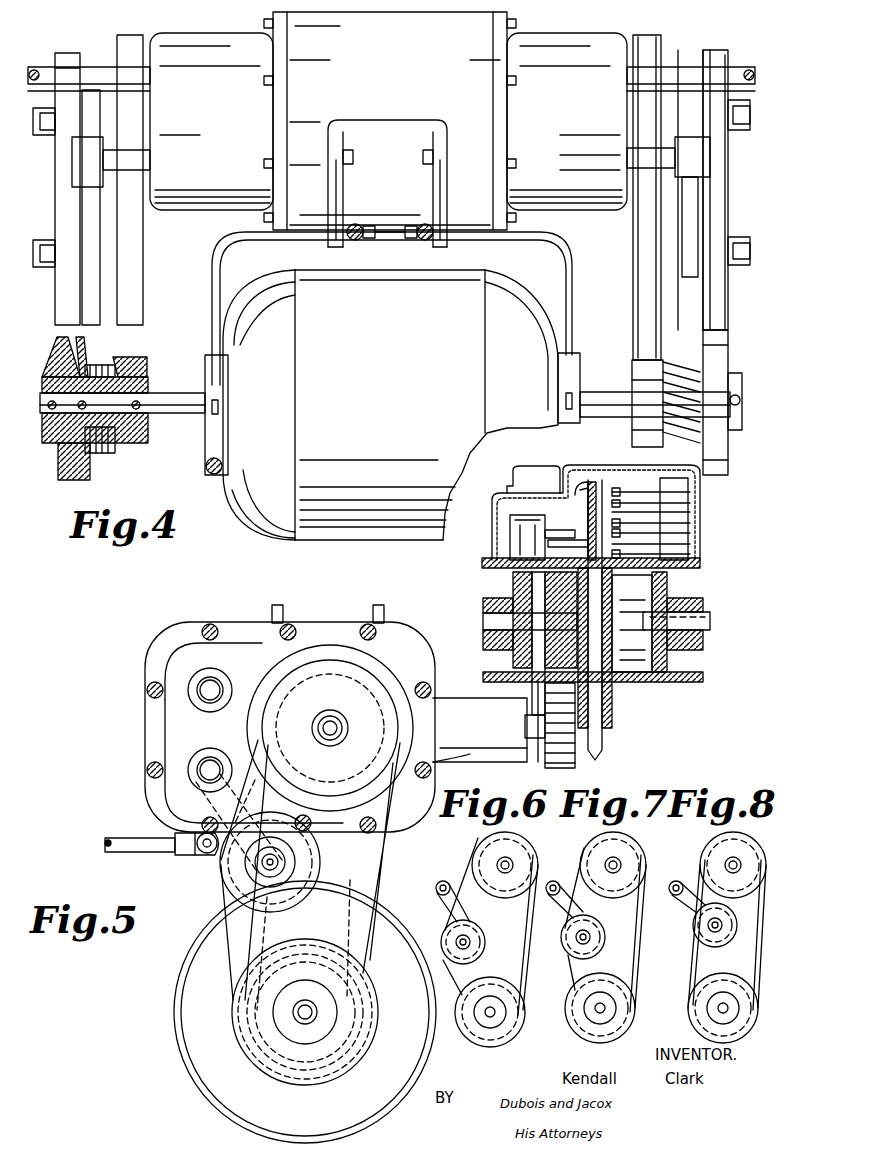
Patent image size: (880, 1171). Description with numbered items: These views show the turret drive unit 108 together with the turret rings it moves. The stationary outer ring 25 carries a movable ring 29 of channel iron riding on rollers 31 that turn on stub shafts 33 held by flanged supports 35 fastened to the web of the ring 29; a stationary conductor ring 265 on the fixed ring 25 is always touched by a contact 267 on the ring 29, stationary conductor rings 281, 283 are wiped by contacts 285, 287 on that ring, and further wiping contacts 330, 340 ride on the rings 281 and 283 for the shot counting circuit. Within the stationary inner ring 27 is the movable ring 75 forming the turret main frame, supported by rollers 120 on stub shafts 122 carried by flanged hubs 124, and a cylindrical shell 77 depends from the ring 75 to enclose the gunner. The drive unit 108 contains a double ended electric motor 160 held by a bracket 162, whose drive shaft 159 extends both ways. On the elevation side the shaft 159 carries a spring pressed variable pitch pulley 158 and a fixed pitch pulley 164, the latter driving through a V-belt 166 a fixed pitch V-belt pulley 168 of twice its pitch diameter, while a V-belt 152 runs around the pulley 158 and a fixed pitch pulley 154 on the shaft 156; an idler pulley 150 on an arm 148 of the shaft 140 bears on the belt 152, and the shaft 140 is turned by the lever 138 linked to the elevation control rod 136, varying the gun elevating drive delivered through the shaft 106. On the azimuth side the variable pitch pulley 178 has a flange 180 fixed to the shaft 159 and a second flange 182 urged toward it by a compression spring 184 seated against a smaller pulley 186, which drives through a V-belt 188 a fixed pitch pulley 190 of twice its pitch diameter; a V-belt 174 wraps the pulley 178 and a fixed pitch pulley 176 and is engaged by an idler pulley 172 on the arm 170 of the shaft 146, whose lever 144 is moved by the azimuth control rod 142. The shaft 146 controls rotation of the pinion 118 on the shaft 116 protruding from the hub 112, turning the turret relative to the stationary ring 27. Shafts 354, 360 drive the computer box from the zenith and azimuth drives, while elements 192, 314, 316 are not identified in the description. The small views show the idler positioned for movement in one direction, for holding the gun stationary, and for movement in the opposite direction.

In FIG. 5, the stationary outer ring 25 is at (610, 680).
In FIG. 5, the stationary inner ring 27 is at (520, 675).
In FIG. 5, the movable ring 29 is at (700, 575).
In FIG. 5, the rollers 31 is at (640, 660).
In FIG. 5, the stub shafts 33 is at (712, 618).
In FIG. 5, the flanged supports 35 is at (700, 640).
In FIG. 5, the movable ring 75 is at (482, 564).
In FIG. 5, the cylindrical shell 77 is at (536, 762).
In FIG. 4, the shaft 106 is at (45, 77).
In FIG. 5, the shaft 106 is at (208, 690).
In FIG. 4, the turret drive unit 108 is at (400, 60).
In FIG. 5, the turret drive unit 108 is at (180, 640).
In FIG. 5, the hub 112 is at (480, 730).
In FIG. 5, the shaft 116 is at (532, 720).
In FIG. 5, the pinion 118 is at (575, 762).
In FIG. 5, the rollers 120 is at (560, 590).
In FIG. 5, the stub shafts 122 is at (490, 618).
In FIG. 5, the flanged hubs 124 is at (495, 640).
In FIG. 4, the elevation control rod 136 is at (425, 224).
In FIG. 5, the elevation control rod 136 is at (120, 848).
In FIG. 4, the lever 138 is at (440, 196).
In FIG. 5, the lever 138 is at (185, 822).
In FIG. 4, the shaft 140 is at (422, 157).
In FIG. 5, the shaft 140 is at (205, 765).
In FIG. 6, the shaft 140 is at (440, 884).
In FIG. 7, the shaft 140 is at (560, 875).
In FIG. 8, the shaft 140 is at (680, 880).
In FIG. 4, the azimuth control rod 142 is at (355, 224).
In FIG. 4, the lever 144 is at (338, 197).
In FIG. 4, the shaft 146 is at (354, 160).
In FIG. 4, the arm 148 is at (682, 237).
In FIG. 5, the arm 148 is at (205, 800).
In FIG. 6, the arm 148 is at (467, 910).
In FIG. 7, the arm 148 is at (575, 915).
In FIG. 8, the arm 148 is at (695, 910).
In FIG. 4, the idler pulley 150 is at (728, 225).
In FIG. 5, the idler pulley 150 is at (225, 880).
In FIG. 6, the idler pulley 150 is at (478, 937).
In FIG. 7, the idler pulley 150 is at (598, 935).
In FIG. 8, the idler pulley 150 is at (715, 945).
In FIG. 4, the V-belt 152 is at (720, 318).
In FIG. 5, the V-belt 152 is at (230, 915).
In FIG. 6, the V-belt 152 is at (520, 947).
In FIG. 7, the V-belt 152 is at (632, 960).
In FIG. 8, the V-belt 152 is at (692, 955).
In FIG. 4, the fixed pitch pulley 154 is at (725, 170).
In FIG. 5, the fixed pitch pulley 154 is at (345, 670).
In FIG. 6, the fixed pitch pulley 154 is at (492, 850).
In FIG. 7, the fixed pitch pulley 154 is at (598, 850).
In FIG. 8, the fixed pitch pulley 154 is at (710, 853).
In FIG. 4, the shaft 156 is at (745, 125).
In FIG. 5, the shaft 156 is at (330, 735).
In FIG. 6, the shaft 156 is at (508, 862).
In FIG. 7, the shaft 156 is at (616, 862).
In FIG. 8, the shaft 156 is at (733, 860).
In FIG. 4, the spring pressed variable pitch pulley 158 is at (725, 365).
In FIG. 5, the spring pressed variable pitch pulley 158 is at (238, 1022).
In FIG. 6, the spring pressed variable pitch pulley 158 is at (515, 1030).
In FIG. 7, the spring pressed variable pitch pulley 158 is at (582, 985).
In FIG. 8, the spring pressed variable pitch pulley 158 is at (700, 985).
In FIG. 4, the drive shaft 159 is at (160, 410).
In FIG. 5, the drive shaft 159 is at (312, 1012).
In FIG. 6, the drive shaft 159 is at (488, 1015).
In FIG. 7, the drive shaft 159 is at (597, 1008).
In FIG. 8, the drive shaft 159 is at (720, 1008).
In FIG. 4, the double ended electric motor 160 is at (390, 535).
In FIG. 5, the double ended electric motor 160 is at (190, 1055).
In FIG. 4, the bracket 162 is at (215, 268).
In FIG. 4, the fixed pitch pulley 164 is at (635, 370).
In FIG. 4, the V-belt 166 is at (645, 250).
In FIG. 5, the V-belt 166 is at (395, 820).
In FIG. 4, the fixed pitch V-belt pulley 168 is at (661, 45).
In FIG. 5, the fixed pitch V-belt pulley 168 is at (310, 650).
In FIG. 4, the arm 170 is at (95, 270).
In FIG. 4, the idler pulley 172 is at (55, 293).
In FIG. 4, the V-belt 174 is at (68, 198).
In FIG. 4, the fixed pitch pulley 176 is at (60, 55).
In FIG. 4, the variable pitch pulley 178 is at (55, 440).
In FIG. 4, the flange 180 is at (52, 380).
In FIG. 4, the second flange 182 is at (90, 455).
In FIG. 4, the compression spring 184 is at (100, 365).
In FIG. 4, the smaller pulley 186 is at (150, 385).
In FIG. 4, the V-belt 188 is at (138, 290).
In FIG. 4, the fixed pitch pulley 190 is at (105, 55).
In FIG. 4, the bolt 192 is at (35, 125).
In FIG. 5, the stationary conductor ring 265 is at (690, 515).
In FIG. 5, the contact 267 is at (690, 510).
In FIG. 5, the stationary conductor ring 281 is at (690, 533).
In FIG. 5, the stationary conductor ring 283 is at (690, 555).
In FIG. 5, the wiping contact 285 is at (695, 527).
In FIG. 5, the wiping contact 287 is at (695, 543).
In FIG. 5, the insulating post 314 is at (596, 490).
In FIG. 5, the contact strip 316 is at (680, 500).
In FIG. 5, the wiping contact 330 is at (560, 520).
In FIG. 5, the wiping contact 340 is at (557, 546).
In FIG. 5, the shaft 354 is at (384, 615).
In FIG. 5, the shaft 360 is at (272, 616).